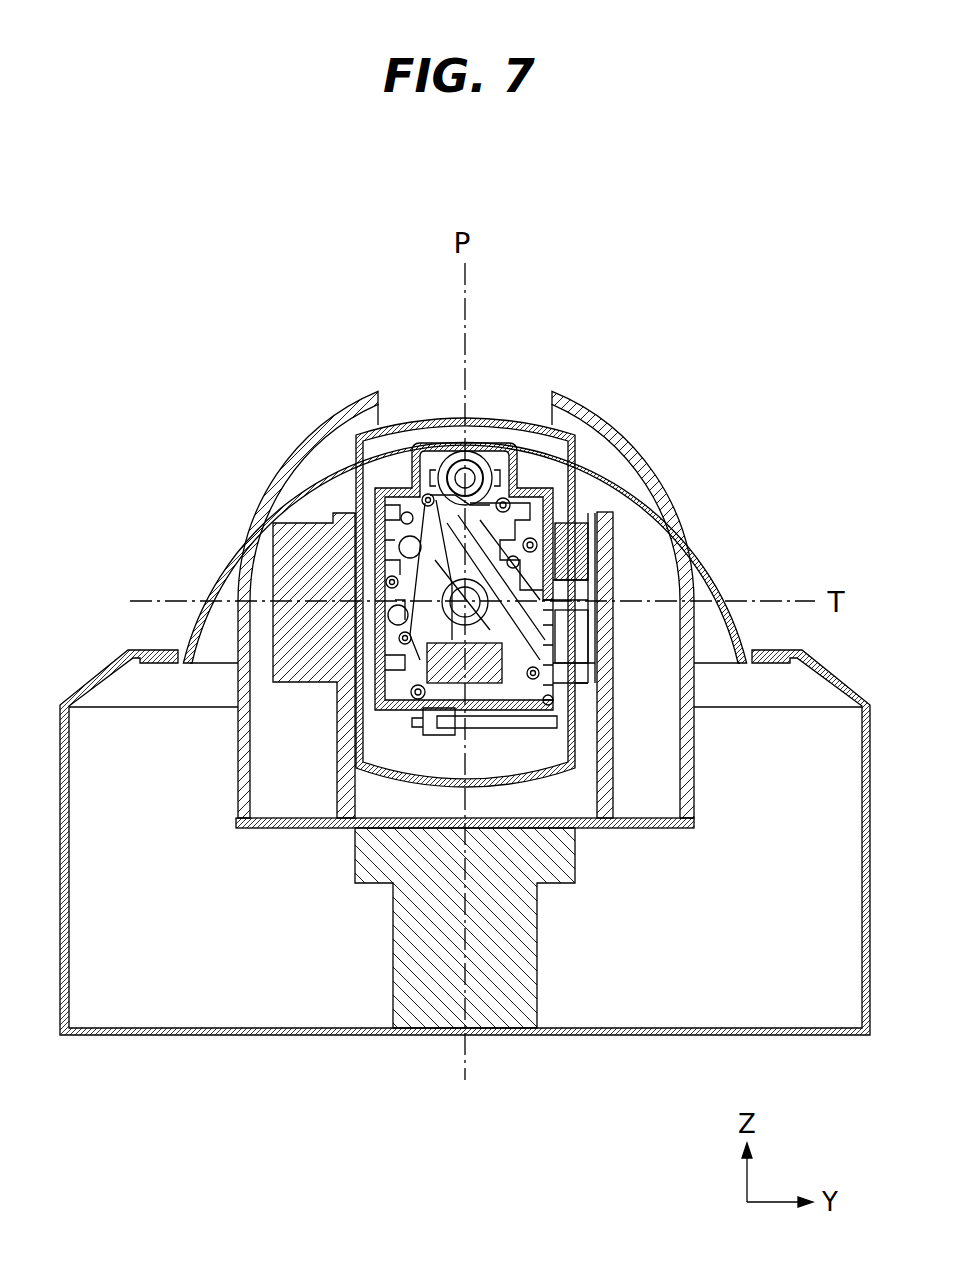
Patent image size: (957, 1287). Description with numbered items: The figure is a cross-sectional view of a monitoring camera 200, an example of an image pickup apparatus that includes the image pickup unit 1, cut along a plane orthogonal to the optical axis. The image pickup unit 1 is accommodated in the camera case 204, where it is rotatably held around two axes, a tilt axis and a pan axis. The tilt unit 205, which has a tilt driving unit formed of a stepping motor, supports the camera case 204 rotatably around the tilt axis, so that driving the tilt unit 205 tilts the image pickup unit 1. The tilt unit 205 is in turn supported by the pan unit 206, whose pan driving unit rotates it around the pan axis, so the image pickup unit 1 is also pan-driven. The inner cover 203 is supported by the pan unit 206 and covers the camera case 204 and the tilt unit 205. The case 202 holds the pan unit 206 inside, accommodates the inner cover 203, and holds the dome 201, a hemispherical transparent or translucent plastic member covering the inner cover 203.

The image pickup unit 1 is at (410, 457).
The monitoring camera 200 is at (594, 208).
The dome 201 is at (280, 380).
The case 202 is at (88, 678).
The inner cover 203 is at (638, 440).
The camera case 204 is at (560, 777).
The tilt unit 205 is at (337, 768).
The pan unit 206 is at (393, 957).